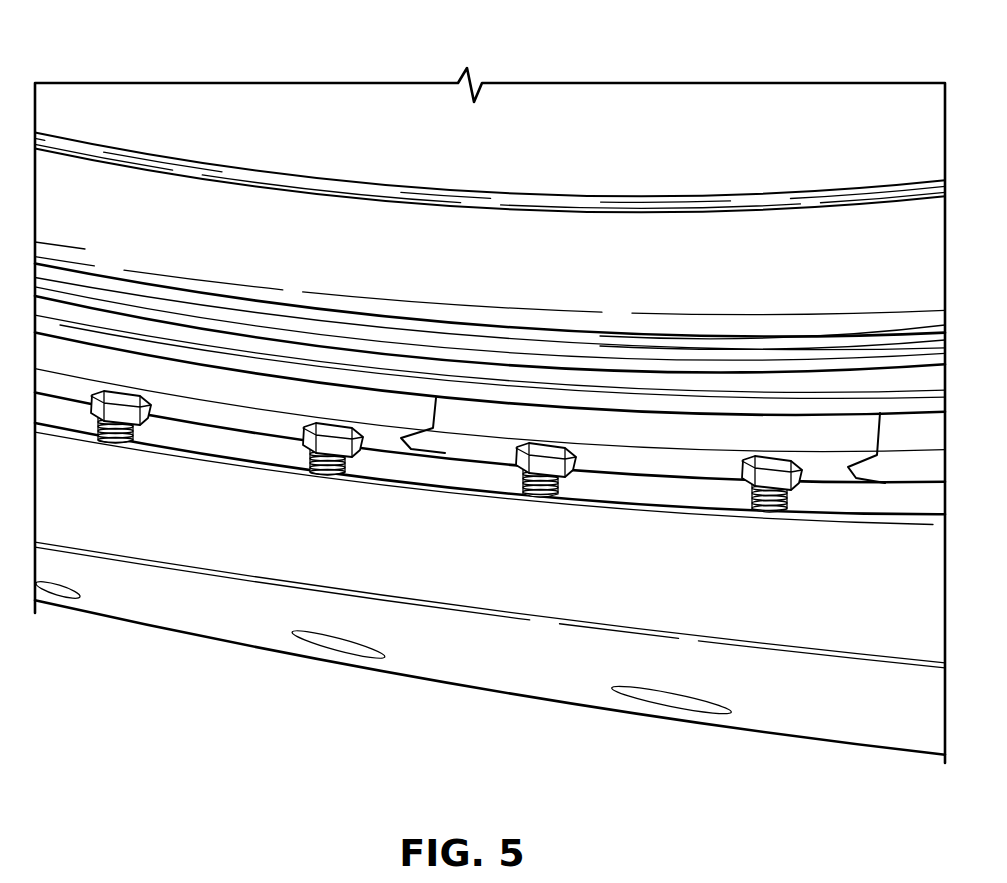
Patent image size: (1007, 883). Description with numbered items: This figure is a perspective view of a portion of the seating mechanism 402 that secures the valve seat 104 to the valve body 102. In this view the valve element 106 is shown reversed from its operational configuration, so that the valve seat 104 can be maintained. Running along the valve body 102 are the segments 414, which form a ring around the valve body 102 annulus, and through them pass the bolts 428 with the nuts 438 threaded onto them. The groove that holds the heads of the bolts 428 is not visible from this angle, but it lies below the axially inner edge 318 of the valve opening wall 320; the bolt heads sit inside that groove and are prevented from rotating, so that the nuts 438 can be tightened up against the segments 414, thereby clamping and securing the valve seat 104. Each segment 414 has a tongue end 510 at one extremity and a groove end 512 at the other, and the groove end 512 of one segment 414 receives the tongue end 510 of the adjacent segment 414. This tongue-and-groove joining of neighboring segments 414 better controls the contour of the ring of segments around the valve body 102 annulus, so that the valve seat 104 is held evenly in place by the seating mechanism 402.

The valve body 102 is at (186, 543).
The valve seat 104 is at (520, 357).
The valve element 106 is at (285, 223).
The axially inner edge 318 is at (465, 493).
The valve opening wall 320 is at (425, 577).
The seating mechanism 402 is at (450, 247).
The segments 414 is at (133, 378).
The bolts 428 is at (110, 440).
The nuts 438 is at (135, 385).
The tongue end 510 is at (428, 440).
The groove end 512 is at (380, 437).